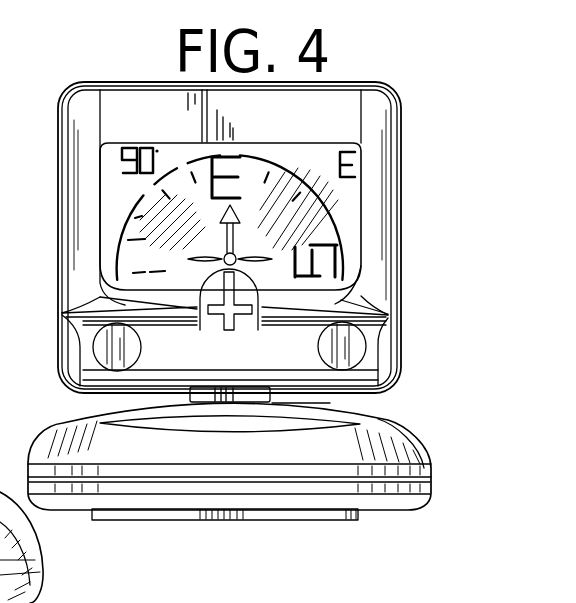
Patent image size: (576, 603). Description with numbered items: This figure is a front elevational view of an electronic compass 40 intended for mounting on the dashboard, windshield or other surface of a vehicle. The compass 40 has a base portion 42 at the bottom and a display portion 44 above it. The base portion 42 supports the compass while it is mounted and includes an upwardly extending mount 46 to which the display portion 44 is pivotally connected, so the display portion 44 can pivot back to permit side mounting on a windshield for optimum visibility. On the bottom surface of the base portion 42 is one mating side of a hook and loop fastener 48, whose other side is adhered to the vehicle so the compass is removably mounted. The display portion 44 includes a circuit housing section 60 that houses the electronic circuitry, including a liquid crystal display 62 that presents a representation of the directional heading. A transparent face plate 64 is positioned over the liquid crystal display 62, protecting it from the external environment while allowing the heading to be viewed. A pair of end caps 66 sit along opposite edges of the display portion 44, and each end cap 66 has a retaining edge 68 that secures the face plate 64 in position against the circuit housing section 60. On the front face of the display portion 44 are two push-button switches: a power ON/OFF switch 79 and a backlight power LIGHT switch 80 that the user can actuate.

The electronic compass 40 is at (390, 70).
The base portion 42 is at (424, 438).
The display portion 44 is at (417, 118).
The mount 46 is at (202, 390).
The hook and loop fastener 48 is at (233, 522).
The circuit housing section 60 is at (122, 103).
The liquid crystal display 62 is at (351, 210).
The transparent face plate 64 is at (128, 199).
The end caps 66 is at (390, 160).
The retaining edge 68 is at (100, 297).
The power switch 79 is at (130, 342).
The backlight power switch 80 is at (318, 345).